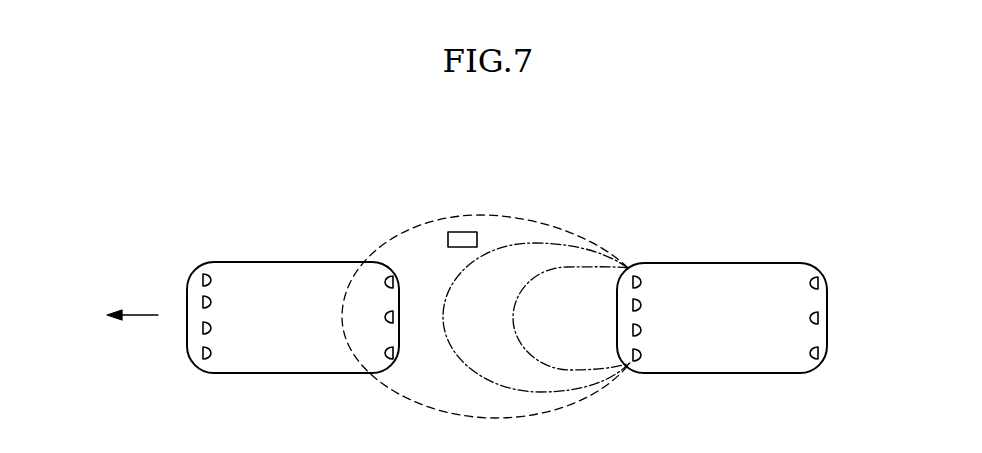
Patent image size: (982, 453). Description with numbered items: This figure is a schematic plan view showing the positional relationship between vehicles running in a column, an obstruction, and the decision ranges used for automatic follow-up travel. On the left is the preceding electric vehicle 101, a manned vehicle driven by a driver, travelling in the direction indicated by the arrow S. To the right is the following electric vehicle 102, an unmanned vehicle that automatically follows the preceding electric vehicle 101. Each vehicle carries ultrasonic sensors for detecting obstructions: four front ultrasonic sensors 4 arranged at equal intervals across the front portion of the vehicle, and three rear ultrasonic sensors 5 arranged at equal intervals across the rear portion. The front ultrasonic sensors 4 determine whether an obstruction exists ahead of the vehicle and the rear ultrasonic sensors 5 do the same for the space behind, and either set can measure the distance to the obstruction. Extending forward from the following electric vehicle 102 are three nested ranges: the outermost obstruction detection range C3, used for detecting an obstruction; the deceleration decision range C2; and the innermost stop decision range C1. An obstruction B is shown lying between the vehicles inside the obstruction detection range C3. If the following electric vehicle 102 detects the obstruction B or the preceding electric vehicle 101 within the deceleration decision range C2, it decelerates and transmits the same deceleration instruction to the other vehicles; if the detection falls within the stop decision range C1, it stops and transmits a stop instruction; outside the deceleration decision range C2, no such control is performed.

The front ultrasonic sensors 4 is at (203, 278).
The rear ultrasonic sensors 5 is at (394, 282).
The preceding electric vehicle 101 is at (272, 262).
The following electric vehicle 102 is at (740, 263).
The obstruction B is at (461, 232).
The stop decision range C1 is at (587, 265).
The deceleration decision range C2 is at (550, 243).
The obstruction detection range C3 is at (508, 215).
The direction S arrow S is at (132, 305).